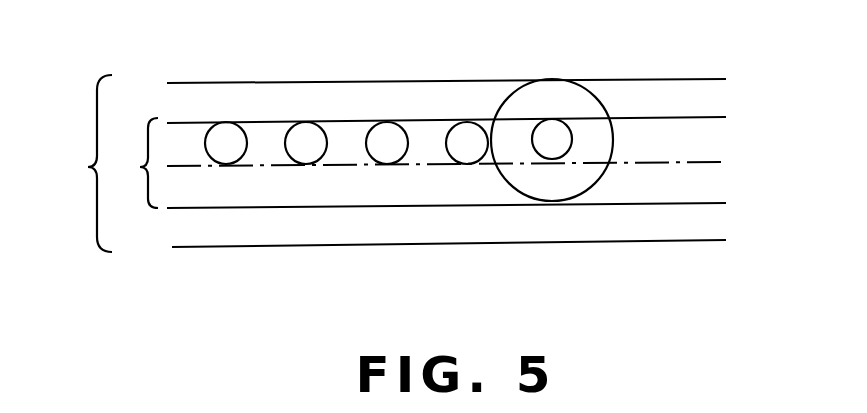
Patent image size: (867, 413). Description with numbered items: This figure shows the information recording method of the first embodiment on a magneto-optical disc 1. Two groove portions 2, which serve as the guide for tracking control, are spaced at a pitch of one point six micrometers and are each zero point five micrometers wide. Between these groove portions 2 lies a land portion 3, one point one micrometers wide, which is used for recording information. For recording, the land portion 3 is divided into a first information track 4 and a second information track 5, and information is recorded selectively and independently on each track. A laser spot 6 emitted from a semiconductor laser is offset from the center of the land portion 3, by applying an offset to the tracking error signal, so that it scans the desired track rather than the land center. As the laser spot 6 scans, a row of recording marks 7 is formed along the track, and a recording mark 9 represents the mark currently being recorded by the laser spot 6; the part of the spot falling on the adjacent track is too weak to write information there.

The magneto-optical disc 1 is at (88, 163).
The groove portions 2 is at (707, 104).
The land portion 3 is at (136, 163).
The first information track 4 is at (705, 145).
The second information track 5 is at (708, 187).
The laser spot 6 is at (596, 100).
The recording mark 7 is at (227, 125).
The recording mark being recorded 9 is at (533, 139).